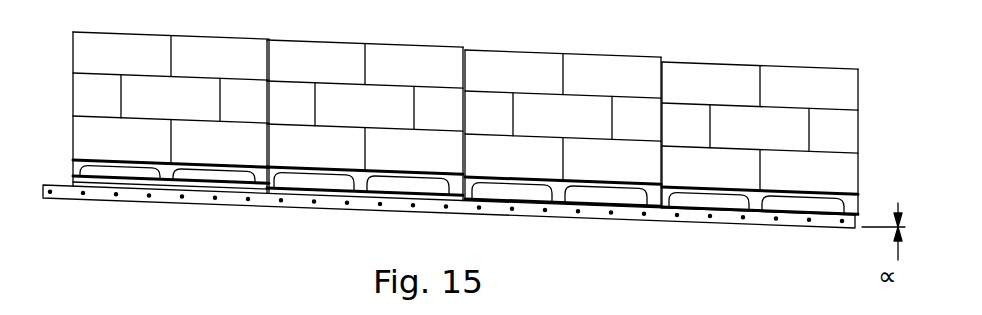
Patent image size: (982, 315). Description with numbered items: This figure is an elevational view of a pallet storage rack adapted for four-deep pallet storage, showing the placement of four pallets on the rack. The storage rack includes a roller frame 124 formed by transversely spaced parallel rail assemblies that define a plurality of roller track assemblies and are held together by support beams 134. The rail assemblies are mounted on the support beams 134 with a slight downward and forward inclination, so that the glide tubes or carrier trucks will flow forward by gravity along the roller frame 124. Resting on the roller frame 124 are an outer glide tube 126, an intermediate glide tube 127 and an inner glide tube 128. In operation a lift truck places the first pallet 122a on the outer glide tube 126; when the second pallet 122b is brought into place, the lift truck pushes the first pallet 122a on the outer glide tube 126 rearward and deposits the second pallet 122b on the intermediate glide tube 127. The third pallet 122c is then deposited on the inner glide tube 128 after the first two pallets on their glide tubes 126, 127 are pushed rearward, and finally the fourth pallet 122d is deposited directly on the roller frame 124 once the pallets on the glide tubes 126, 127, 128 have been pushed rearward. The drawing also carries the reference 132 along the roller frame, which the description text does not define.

The first pallet 122a is at (213, 53).
The second pallet 122b is at (410, 63).
The third pallet 122c is at (607, 70).
The fourth pallet 122d is at (803, 82).
The roller frame 124 is at (107, 202).
The outer glide tube 126 is at (158, 186).
The intermediate glide tube 127 is at (365, 192).
The inner glide tube 128 is at (553, 192).
The rollers 132 is at (717, 215).
The support beams 134 is at (63, 200).